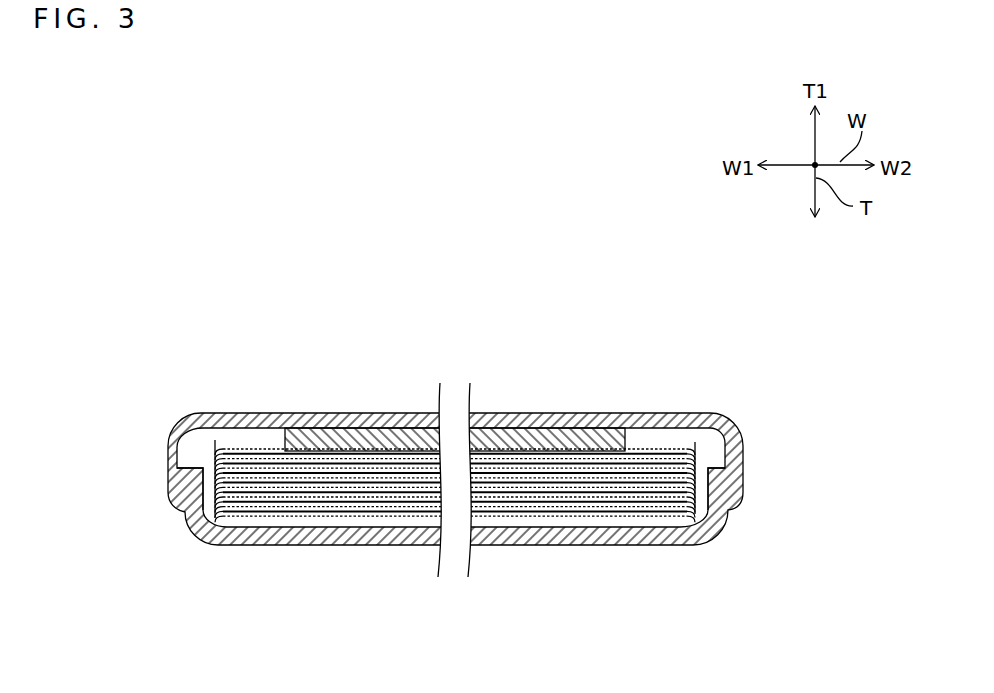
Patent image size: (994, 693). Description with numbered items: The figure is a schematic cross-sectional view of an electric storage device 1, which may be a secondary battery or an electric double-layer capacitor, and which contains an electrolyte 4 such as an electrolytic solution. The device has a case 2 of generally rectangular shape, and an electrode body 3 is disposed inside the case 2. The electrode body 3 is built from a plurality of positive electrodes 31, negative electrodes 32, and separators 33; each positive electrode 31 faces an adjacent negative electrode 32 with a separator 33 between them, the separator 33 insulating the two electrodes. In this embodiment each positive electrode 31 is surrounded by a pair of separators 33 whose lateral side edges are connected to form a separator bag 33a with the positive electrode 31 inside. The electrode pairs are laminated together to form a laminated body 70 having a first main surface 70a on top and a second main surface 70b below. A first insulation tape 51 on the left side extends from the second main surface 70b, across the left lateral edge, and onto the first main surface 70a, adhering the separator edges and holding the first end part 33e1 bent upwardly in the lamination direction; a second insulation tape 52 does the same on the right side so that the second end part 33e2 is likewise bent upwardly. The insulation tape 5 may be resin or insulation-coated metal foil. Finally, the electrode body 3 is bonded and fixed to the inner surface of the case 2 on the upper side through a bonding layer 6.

The electric storage device 1 is at (705, 328).
The case 2 is at (748, 450).
The electrode body 3 is at (512, 516).
The electrolyte 4 is at (203, 443).
The insulation tape 5 is at (247, 445).
The bonding layer 6 is at (372, 428).
The positive electrode 31 is at (280, 458).
The negative electrode 32 is at (283, 513).
The separator 33 is at (245, 508).
The separator bag 33a is at (560, 513).
The first end part 33e1 is at (213, 525).
The second end part 33e2 is at (692, 500).
The first insulation tape 51 is at (177, 498).
The second insulation tape 52 is at (698, 478).
The laminated body 70 is at (633, 446).
The first main surface 70a is at (582, 452).
The second main surface 70b is at (605, 513).